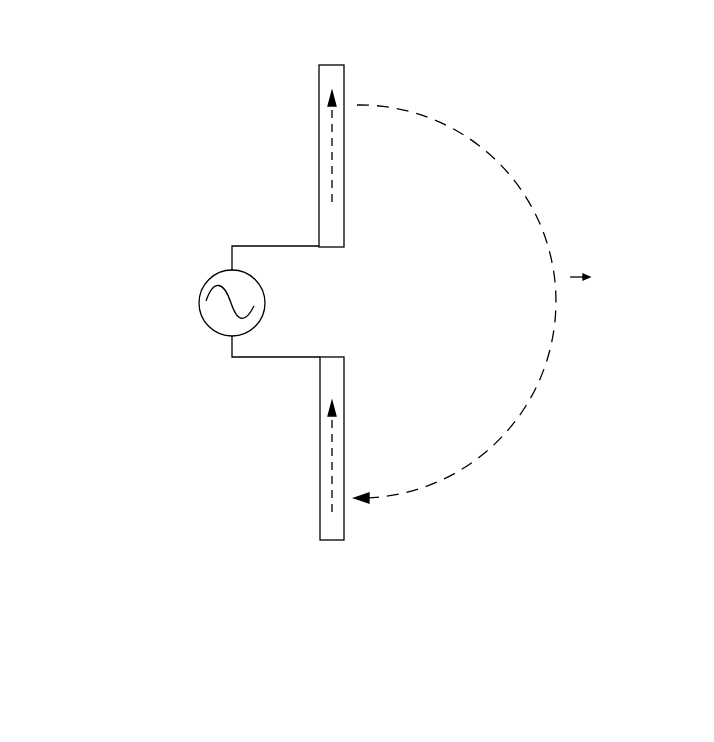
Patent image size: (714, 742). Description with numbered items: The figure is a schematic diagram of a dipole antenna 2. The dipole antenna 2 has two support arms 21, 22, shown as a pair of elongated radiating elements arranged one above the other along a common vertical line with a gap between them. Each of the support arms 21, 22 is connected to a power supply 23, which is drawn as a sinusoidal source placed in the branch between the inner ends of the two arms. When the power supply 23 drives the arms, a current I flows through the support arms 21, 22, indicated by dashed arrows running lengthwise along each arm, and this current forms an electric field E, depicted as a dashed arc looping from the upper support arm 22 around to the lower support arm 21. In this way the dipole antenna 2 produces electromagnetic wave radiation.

The dipole antenna 2 is at (175, 85).
The support arm 21 is at (319, 458).
The support arm 22 is at (319, 138).
The power supply 23 is at (199, 302).